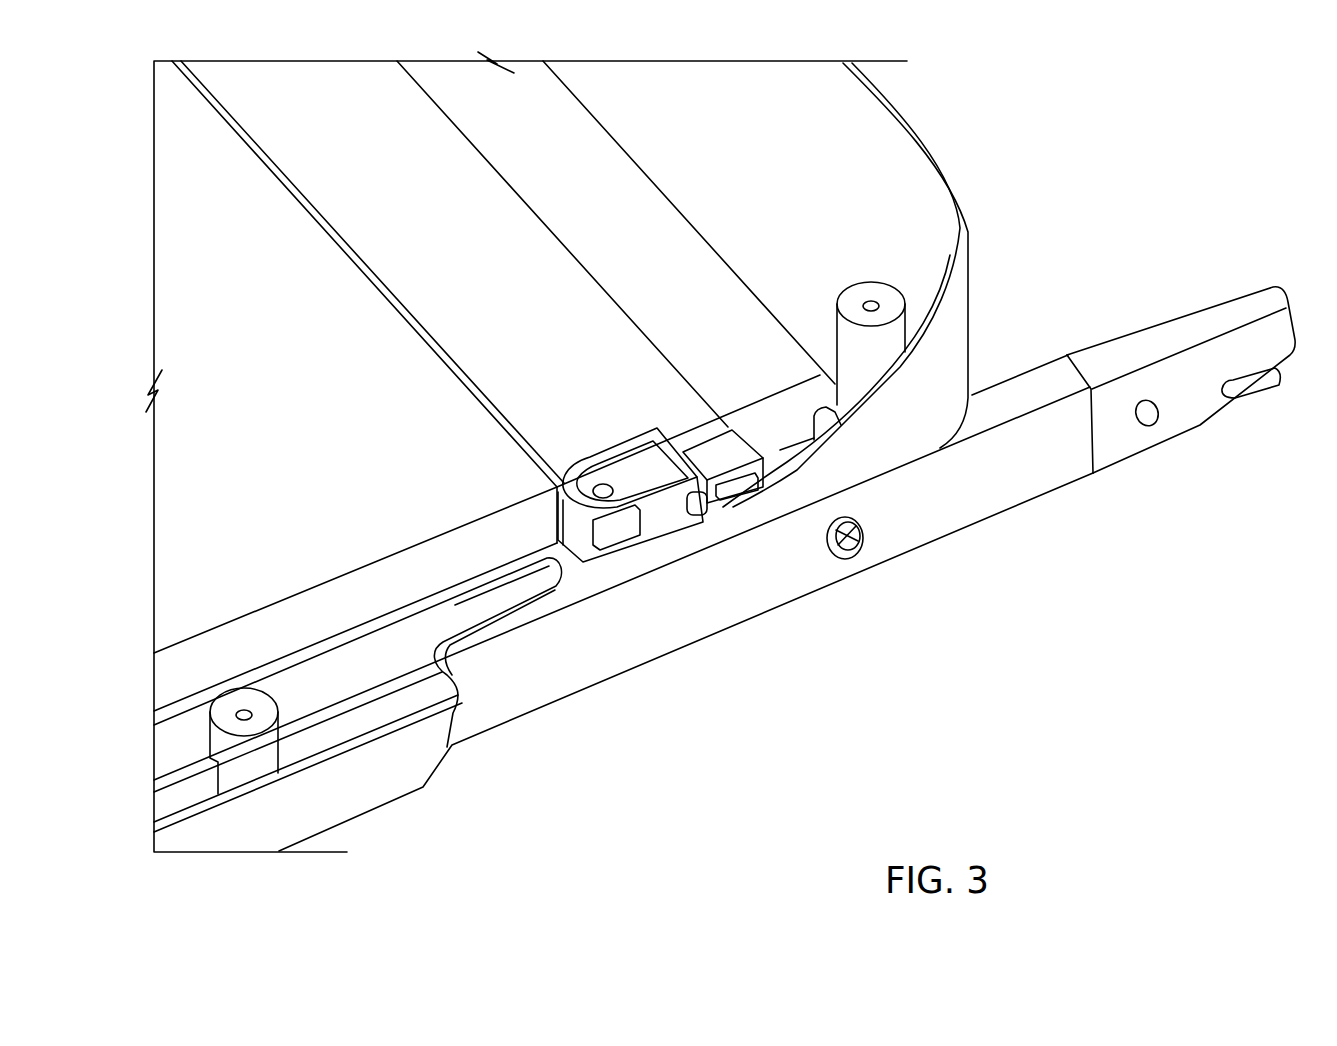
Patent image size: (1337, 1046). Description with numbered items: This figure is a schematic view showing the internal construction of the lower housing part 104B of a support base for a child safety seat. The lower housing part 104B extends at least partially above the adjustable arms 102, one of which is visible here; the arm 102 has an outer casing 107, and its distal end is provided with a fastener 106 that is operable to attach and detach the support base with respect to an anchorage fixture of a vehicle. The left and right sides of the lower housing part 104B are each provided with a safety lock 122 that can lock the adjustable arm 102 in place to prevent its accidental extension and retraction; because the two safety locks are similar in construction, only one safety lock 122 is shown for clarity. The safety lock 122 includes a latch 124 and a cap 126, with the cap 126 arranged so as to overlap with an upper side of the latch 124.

The adjustable arm 102 is at (1022, 578).
The lower housing part 104B is at (943, 356).
The fastener 106 is at (1190, 415).
The outer casing 107 is at (893, 543).
The safety lock 122 is at (699, 565).
The latch 124 is at (743, 497).
The cap 126 is at (653, 517).